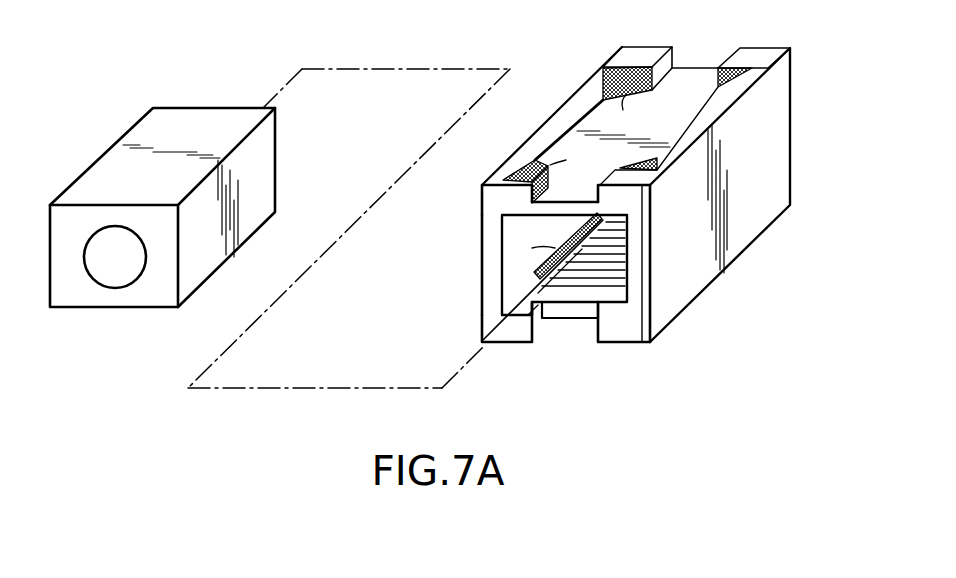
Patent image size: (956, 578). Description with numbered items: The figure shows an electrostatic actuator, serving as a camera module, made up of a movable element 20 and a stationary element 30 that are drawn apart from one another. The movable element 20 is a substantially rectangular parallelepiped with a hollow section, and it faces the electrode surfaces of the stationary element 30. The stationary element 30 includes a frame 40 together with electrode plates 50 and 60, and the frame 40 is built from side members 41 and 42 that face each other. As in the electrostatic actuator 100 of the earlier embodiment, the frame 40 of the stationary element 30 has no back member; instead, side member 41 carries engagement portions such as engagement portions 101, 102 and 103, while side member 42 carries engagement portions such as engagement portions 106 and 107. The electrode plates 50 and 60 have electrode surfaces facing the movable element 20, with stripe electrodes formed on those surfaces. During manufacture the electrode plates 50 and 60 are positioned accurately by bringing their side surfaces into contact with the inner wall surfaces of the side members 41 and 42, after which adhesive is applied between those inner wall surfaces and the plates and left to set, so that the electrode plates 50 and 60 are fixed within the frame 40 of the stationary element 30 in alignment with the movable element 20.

The movable element 20 is at (190, 108).
The stationary element 30 is at (790, 113).
The electrostatic actuator 100 is at (535, 76).
The engagement portion 101 is at (500, 207).
The engagement portion 102 is at (630, 55).
The engagement portion 103 is at (510, 333).
The engagement portion 106 is at (770, 53).
The engagement portion 107 is at (623, 335).
The electrode plate 50 is at (697, 73).
The electrode plate 60 is at (567, 320).
The frame 40 is at (767, 230).
The side member 41 is at (488, 266).
The side member 42 is at (690, 285).